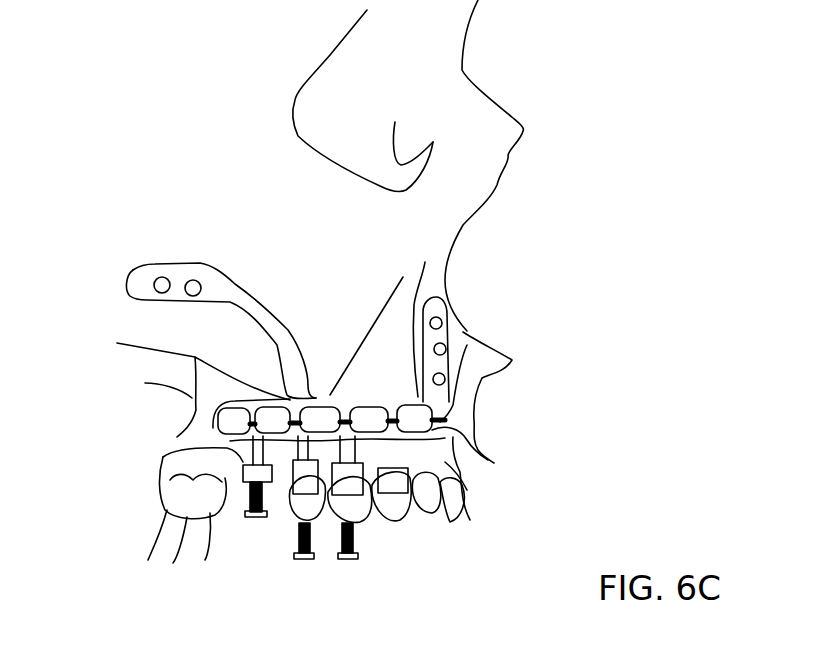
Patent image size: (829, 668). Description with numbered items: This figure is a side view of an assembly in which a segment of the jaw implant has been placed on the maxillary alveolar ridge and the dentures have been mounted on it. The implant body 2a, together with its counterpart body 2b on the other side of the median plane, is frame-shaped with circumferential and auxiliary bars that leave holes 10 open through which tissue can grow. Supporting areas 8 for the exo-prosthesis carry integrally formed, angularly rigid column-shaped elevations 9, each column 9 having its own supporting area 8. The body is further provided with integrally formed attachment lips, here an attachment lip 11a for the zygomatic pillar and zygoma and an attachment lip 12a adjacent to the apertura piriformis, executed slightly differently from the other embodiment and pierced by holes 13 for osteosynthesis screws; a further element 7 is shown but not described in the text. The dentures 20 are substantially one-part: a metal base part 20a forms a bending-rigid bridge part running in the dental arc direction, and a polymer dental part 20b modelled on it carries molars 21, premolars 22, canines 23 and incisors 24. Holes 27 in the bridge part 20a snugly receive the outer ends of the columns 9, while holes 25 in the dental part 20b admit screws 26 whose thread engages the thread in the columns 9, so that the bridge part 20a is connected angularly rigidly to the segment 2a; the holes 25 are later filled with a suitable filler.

The body 2a is at (512, 387).
The body 2b is at (350, 400).
The lip bumper 7 is at (450, 455).
The supporting area 8 is at (314, 427).
The column-shaped elevation 9 is at (192, 415).
The hole 10 is at (384, 316).
The attachment lip 11a is at (133, 281).
The attachment lip 12a is at (452, 322).
The hole 13 is at (203, 285).
The dentures 20 is at (160, 478).
The base part 20a is at (173, 450).
The dental part 20b is at (163, 510).
The molar 21 is at (207, 528).
The premolar 22 is at (297, 557).
The canine 23 is at (403, 512).
The incisor 24 is at (450, 505).
The hole 25 is at (440, 522).
The screw 26 is at (357, 545).
The hole 27 is at (467, 490).